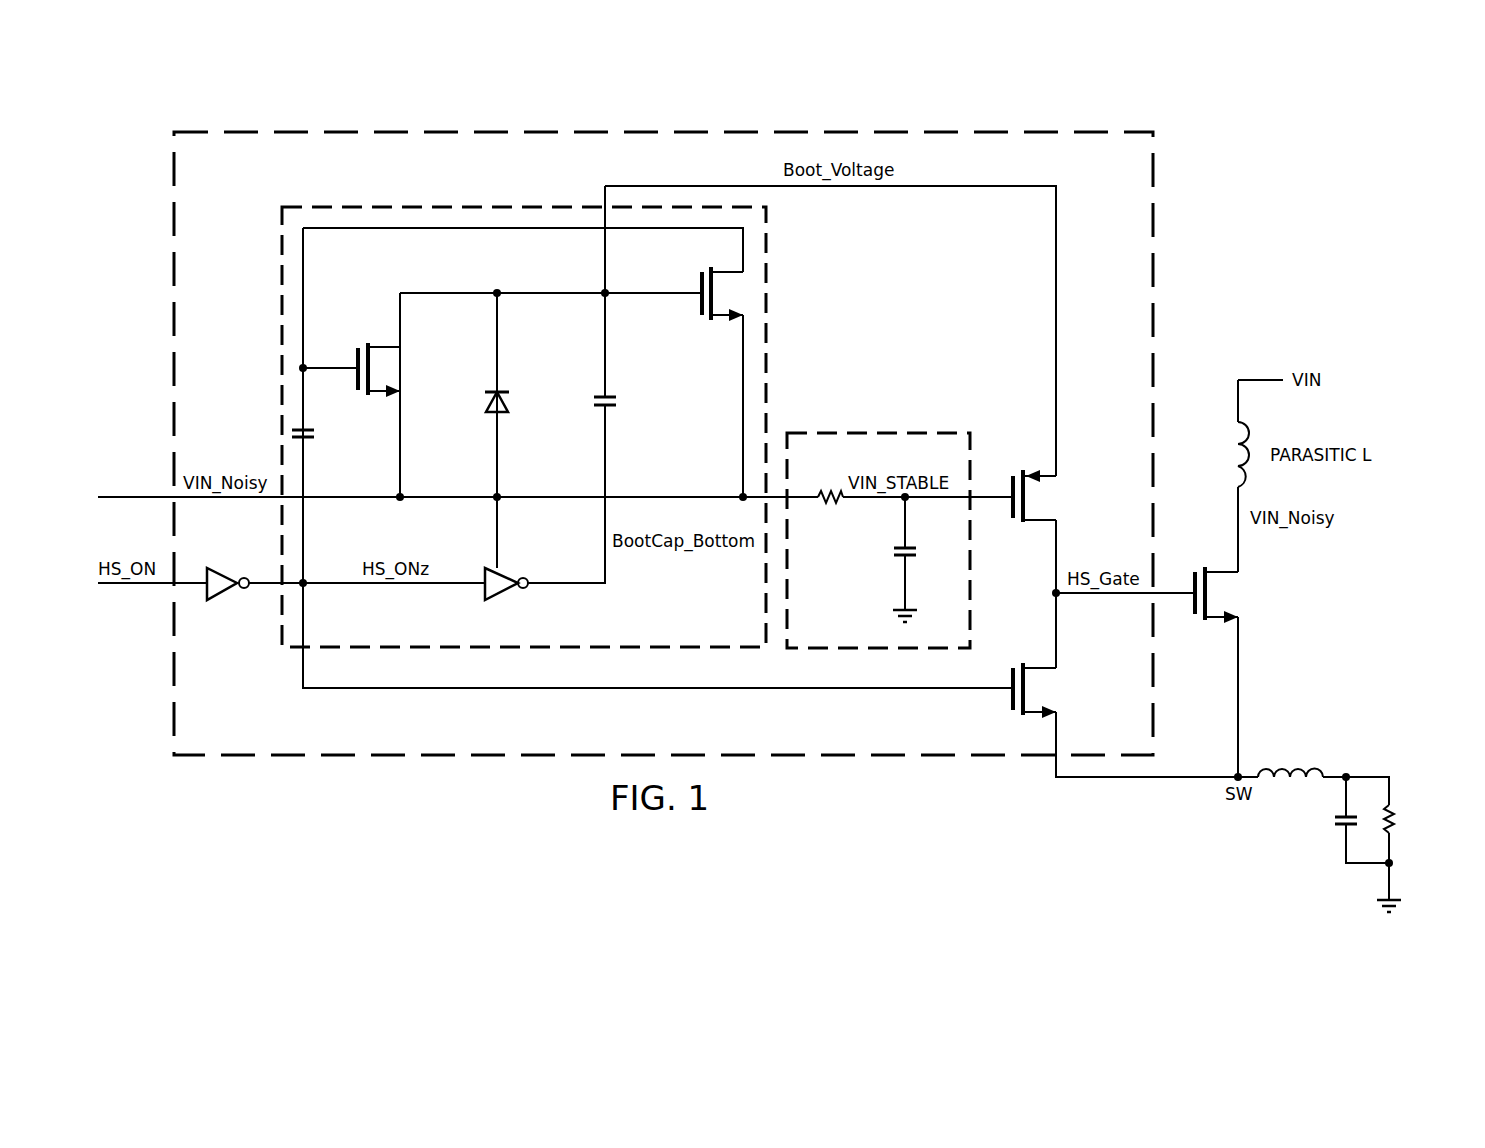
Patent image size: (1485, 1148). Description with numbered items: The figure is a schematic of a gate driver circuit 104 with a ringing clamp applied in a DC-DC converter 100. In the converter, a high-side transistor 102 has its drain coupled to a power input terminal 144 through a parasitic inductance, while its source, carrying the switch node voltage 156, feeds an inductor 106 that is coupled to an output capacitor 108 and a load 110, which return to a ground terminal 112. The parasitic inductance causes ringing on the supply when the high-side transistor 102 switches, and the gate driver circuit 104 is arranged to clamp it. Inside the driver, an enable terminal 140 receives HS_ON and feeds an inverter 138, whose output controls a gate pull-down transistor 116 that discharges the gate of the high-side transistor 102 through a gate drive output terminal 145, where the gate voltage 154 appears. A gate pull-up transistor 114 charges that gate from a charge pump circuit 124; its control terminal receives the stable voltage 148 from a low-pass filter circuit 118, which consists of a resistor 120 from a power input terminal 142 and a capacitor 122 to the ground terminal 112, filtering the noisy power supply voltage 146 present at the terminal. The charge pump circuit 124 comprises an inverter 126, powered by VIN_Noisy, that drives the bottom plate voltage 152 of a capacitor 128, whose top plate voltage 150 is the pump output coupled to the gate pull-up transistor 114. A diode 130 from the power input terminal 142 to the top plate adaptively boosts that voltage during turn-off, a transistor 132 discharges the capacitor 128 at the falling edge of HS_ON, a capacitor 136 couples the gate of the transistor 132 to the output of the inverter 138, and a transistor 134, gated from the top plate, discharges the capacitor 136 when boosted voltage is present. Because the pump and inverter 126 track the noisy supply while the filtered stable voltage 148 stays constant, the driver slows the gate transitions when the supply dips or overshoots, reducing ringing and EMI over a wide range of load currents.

The DC-DC converter 100 is at (1328, 150).
The high-side transistor 102 is at (1192, 615).
The gate driver circuit 104 is at (480, 128).
The inductor 106 is at (1298, 760).
The output capacitor 108 is at (1333, 822).
The load 110 is at (1396, 822).
The ground terminal 112 is at (892, 619).
The gate pull-up transistor 114 is at (1010, 482).
The gate pull-down transistor 116 is at (1010, 702).
The low-pass filter circuit 118 is at (918, 428).
The resistor 120 is at (828, 490).
The capacitor 122 is at (892, 555).
The charge pump circuit 124 is at (445, 202).
The inverter 126 is at (505, 597).
The capacitor 128 is at (592, 400).
The diode 130 is at (485, 400).
The transistor 132 is at (355, 352).
The transistor 134 is at (700, 280).
The capacitor 136 is at (318, 434).
The inverter 138 is at (226, 597).
The enable terminal 140 is at (135, 588).
The power input terminal 142 is at (133, 495).
The power input terminal 144 is at (1262, 378).
The gate drive output terminal 145 is at (1052, 598).
The noisy power supply voltage 146 is at (368, 503).
The stable voltage 148 is at (925, 502).
The top plate voltage 150 is at (840, 190).
The bottom plate voltage 152 is at (603, 543).
The gate voltage 154 is at (1103, 598).
The switch node voltage 156 is at (1232, 774).